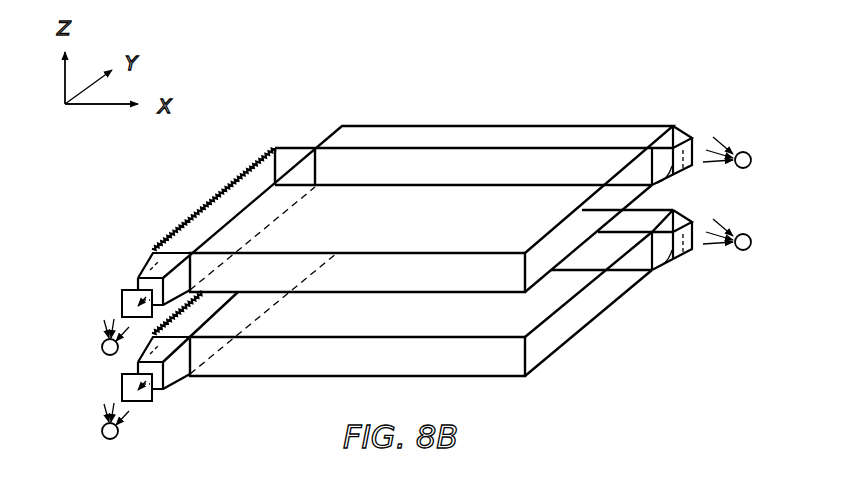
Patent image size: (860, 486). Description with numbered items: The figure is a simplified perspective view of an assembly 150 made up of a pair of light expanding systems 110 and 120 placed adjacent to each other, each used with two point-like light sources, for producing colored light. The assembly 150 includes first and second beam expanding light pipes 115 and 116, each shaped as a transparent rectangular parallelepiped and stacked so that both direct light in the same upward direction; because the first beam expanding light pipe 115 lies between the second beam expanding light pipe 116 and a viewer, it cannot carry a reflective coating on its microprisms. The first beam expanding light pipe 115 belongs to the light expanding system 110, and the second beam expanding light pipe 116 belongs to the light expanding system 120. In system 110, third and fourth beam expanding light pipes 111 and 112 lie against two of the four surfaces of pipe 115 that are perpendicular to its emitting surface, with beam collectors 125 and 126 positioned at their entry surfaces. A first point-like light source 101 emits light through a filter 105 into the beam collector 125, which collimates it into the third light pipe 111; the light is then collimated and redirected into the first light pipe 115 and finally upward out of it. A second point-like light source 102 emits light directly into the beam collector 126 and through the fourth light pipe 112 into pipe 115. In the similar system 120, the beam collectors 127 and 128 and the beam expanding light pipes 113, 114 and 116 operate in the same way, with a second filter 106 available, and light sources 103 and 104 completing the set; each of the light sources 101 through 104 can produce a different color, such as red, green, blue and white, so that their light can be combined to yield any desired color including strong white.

The first point-like light source 101 is at (103, 343).
The second point-like light source 102 is at (750, 153).
The point-like light source 103 is at (108, 440).
The point-like light source 104 is at (750, 236).
The filter 105 is at (122, 301).
The filter 106 is at (140, 403).
The light expanding system 110 is at (173, 199).
The third beam expanding light pipe 111 is at (233, 188).
The fourth beam expanding light pipe 112 is at (428, 134).
The beam expanding light pipe 113 is at (204, 312).
The beam expanding light pipe 114 is at (655, 213).
The first beam expanding light pipe 115 is at (508, 200).
The second beam expanding light pipe 116 is at (547, 303).
The light expanding system 120 is at (100, 404).
The beam collector 125 is at (140, 268).
The beam collector 126 is at (686, 127).
The beam collector 127 is at (175, 388).
The beam collector 128 is at (663, 263).
The assembly 150 is at (372, 100).